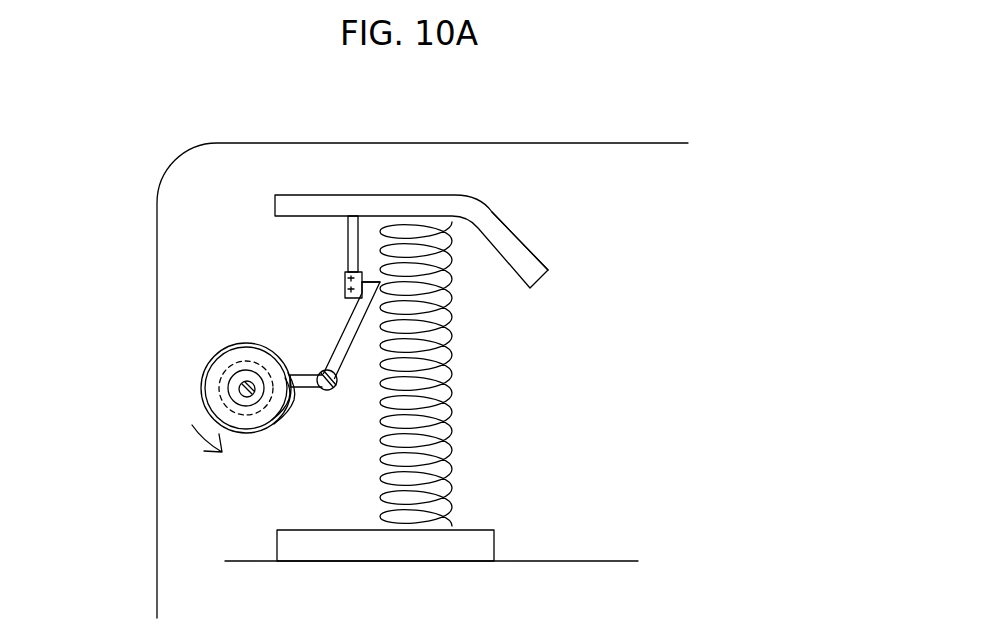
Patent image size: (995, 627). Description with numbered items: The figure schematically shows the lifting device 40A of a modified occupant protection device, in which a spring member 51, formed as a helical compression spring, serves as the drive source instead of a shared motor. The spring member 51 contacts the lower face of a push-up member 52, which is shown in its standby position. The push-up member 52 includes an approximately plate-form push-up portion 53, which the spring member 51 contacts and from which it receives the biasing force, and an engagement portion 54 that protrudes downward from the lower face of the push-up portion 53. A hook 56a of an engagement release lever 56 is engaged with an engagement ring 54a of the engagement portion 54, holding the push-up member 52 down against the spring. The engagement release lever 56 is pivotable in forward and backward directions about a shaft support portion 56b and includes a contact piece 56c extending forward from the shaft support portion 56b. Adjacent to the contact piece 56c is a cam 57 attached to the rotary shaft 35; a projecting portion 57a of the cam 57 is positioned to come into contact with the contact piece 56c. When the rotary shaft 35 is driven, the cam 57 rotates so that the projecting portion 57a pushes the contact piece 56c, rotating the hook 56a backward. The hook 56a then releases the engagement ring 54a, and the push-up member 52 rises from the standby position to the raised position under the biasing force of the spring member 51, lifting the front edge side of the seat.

The lifting device 40A is at (585, 450).
The spring member 51 is at (453, 465).
The push-up member 52 is at (560, 229).
The push-up portion 53 is at (425, 207).
The engagement portion 54 is at (353, 237).
The engagement ring 54a is at (343, 284).
The engagement release lever 56 is at (305, 328).
The hook 56a is at (348, 322).
The shaft support portion 56b is at (325, 391).
The contact piece 56c is at (293, 410).
The cam 57 is at (212, 368).
The projecting portion 57a is at (256, 424).
The rotary shaft 35 is at (247, 389).